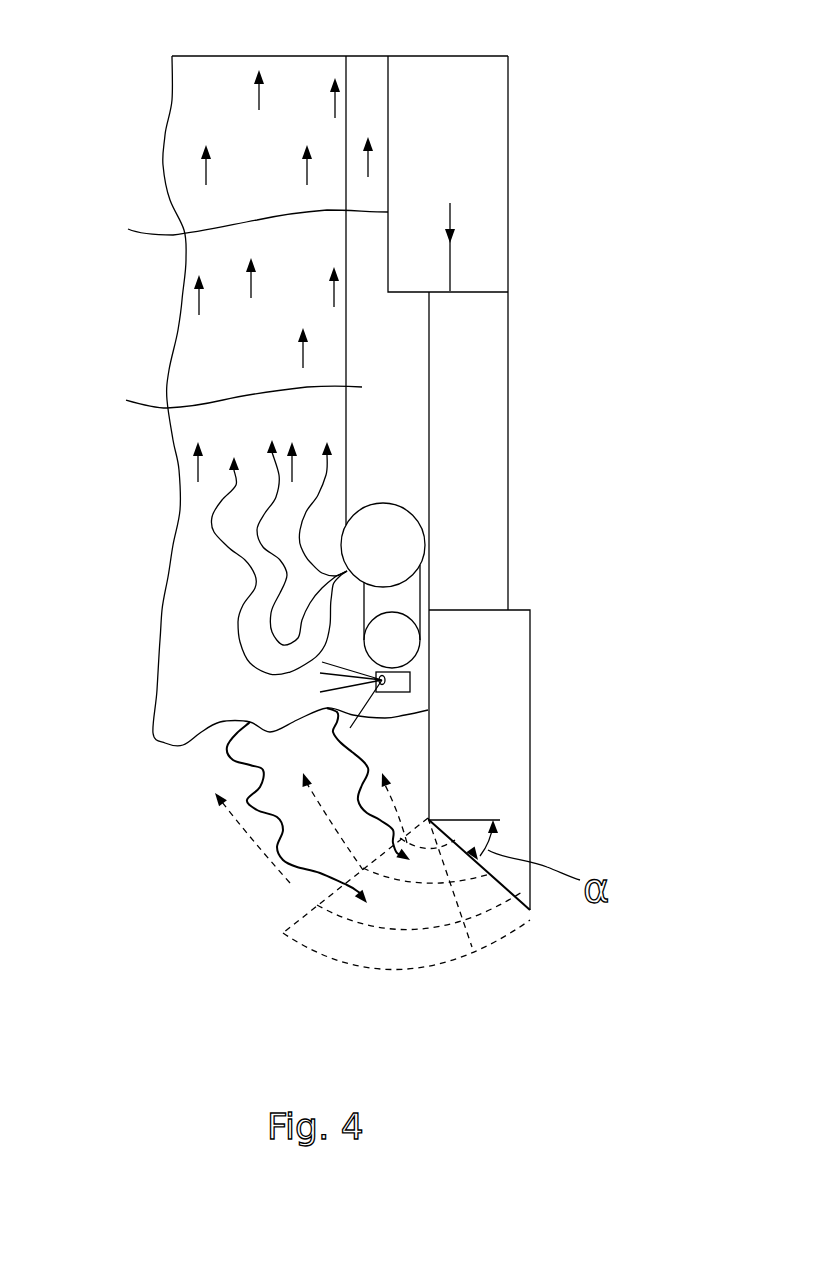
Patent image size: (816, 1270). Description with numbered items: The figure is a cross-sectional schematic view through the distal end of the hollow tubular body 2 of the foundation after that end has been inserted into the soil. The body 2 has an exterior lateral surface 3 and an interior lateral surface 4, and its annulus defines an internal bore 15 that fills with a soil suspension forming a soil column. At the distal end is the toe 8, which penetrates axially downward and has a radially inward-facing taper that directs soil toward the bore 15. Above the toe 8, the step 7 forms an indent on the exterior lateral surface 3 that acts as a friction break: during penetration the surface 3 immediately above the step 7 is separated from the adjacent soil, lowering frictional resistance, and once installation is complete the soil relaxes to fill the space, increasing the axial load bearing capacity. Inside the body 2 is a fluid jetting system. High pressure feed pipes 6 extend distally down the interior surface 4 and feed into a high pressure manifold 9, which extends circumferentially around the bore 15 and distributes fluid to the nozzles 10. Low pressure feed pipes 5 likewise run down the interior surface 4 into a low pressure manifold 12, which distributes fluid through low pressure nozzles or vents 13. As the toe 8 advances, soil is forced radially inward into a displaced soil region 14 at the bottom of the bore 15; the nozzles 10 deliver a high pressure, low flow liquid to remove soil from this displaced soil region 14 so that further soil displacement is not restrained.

The hollow tubular body 2 is at (482, 410).
The exterior lateral surface 3 is at (508, 245).
The interior lateral surface 4 is at (245, 289).
The low pressure feed pipes 5 is at (232, 433).
The high pressure feed pipes 6 is at (363, 600).
The step 7 is at (517, 610).
The toe 8 is at (488, 872).
The high pressure manifold 9 is at (403, 645).
The nozzles 10 is at (410, 690).
The low pressure manifold 12 is at (390, 550).
The low pressure nozzles or vents 13 is at (343, 543).
The displaced soil region 14 is at (310, 763).
The bore 15 is at (213, 112).